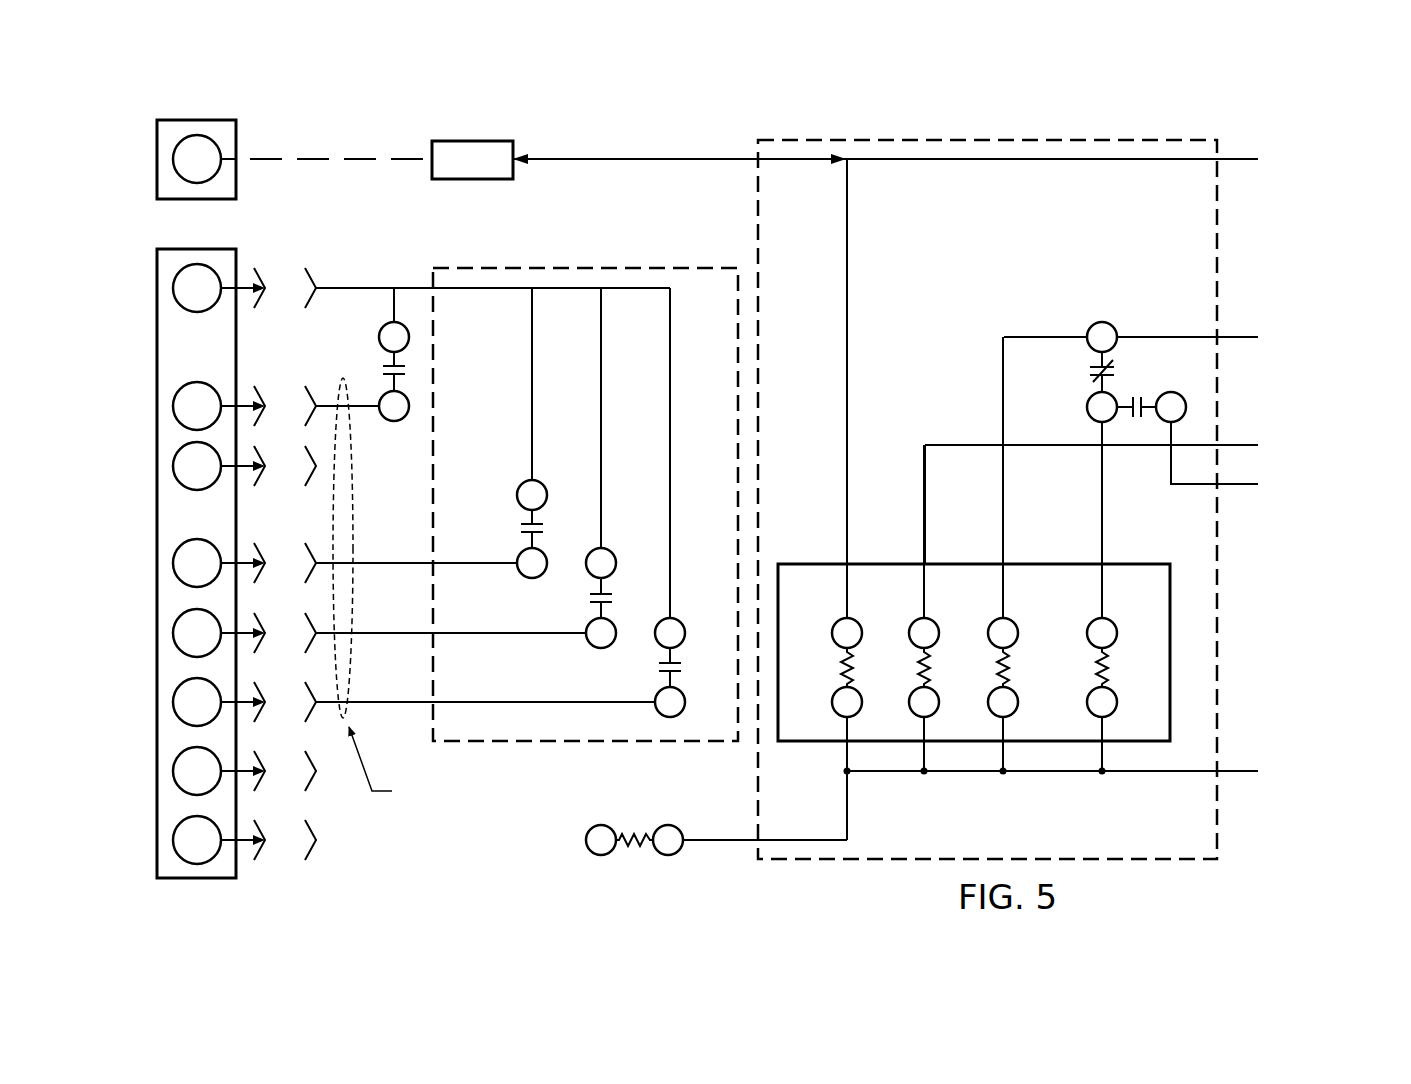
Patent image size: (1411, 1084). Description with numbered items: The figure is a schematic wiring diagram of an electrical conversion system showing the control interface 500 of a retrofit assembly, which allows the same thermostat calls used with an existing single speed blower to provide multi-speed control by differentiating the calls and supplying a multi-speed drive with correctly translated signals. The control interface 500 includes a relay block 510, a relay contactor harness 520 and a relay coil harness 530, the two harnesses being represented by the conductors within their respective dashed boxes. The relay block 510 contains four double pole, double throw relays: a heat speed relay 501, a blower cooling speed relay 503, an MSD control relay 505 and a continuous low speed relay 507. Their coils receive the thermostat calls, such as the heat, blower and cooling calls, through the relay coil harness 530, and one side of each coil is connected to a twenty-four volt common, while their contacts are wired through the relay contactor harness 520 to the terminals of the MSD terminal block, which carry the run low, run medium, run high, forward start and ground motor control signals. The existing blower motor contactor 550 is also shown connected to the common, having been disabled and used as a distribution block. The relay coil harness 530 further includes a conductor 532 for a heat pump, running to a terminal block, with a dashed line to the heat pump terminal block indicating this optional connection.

The control interface 500 is at (1324, 128).
The heat speed relay 501 is at (522, 482).
The blower cooling speed relay 503 is at (607, 550).
The MSD control relay 505 is at (381, 326).
The continuous low speed relay 507 is at (676, 620).
The relay block 510 is at (1144, 560).
The relay contactor harness 520 is at (550, 265).
The relay coil harness 530 is at (1221, 211).
The conductor 532 is at (635, 157).
The existing contactor 550 is at (598, 808).